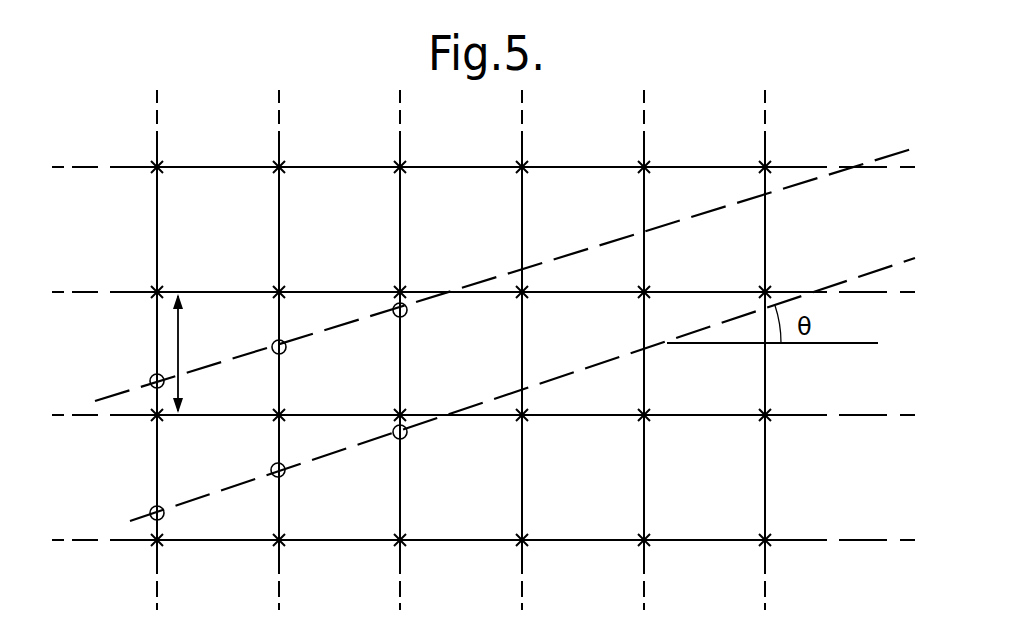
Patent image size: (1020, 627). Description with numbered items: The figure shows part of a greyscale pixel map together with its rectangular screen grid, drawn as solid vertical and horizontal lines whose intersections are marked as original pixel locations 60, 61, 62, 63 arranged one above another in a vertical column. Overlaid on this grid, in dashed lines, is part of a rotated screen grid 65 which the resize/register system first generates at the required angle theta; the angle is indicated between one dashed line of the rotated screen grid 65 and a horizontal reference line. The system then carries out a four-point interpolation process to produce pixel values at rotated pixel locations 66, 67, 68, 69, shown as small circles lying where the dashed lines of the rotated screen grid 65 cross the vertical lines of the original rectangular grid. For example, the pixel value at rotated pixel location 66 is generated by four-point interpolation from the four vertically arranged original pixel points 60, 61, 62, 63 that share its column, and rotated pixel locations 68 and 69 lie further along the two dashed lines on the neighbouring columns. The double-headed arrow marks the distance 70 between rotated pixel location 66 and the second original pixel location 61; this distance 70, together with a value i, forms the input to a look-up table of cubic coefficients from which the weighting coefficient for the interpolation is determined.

The pixel location 60 is at (157, 163).
The second original pixel location 61 is at (157, 288).
The pixel location 62 is at (157, 420).
The pixel location 63 is at (157, 545).
The rotated screen grid 65 is at (625, 235).
The rotated pixel location 66 is at (153, 375).
The rotated pixel location 67 is at (151, 508).
The rotated pixel location 68 is at (274, 341).
The rotated pixel location 69 is at (273, 465).
The distance 70 is at (181, 325).